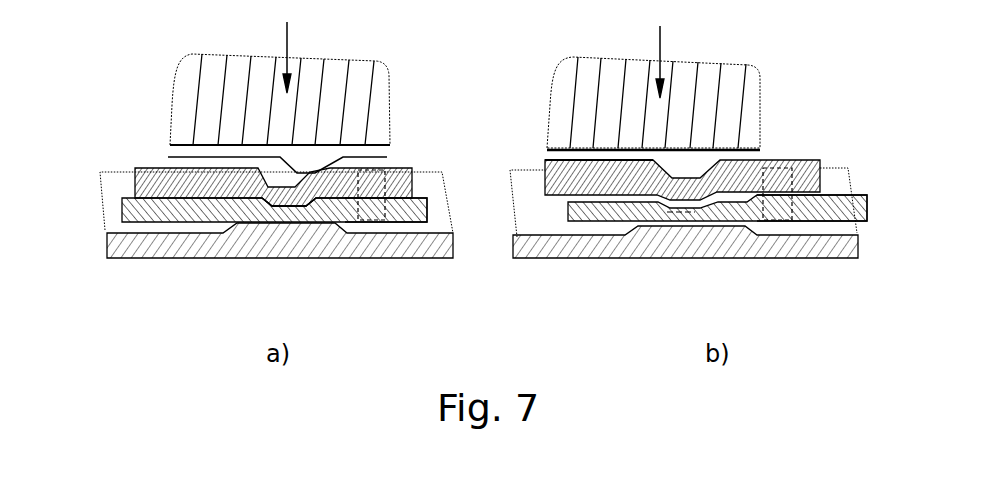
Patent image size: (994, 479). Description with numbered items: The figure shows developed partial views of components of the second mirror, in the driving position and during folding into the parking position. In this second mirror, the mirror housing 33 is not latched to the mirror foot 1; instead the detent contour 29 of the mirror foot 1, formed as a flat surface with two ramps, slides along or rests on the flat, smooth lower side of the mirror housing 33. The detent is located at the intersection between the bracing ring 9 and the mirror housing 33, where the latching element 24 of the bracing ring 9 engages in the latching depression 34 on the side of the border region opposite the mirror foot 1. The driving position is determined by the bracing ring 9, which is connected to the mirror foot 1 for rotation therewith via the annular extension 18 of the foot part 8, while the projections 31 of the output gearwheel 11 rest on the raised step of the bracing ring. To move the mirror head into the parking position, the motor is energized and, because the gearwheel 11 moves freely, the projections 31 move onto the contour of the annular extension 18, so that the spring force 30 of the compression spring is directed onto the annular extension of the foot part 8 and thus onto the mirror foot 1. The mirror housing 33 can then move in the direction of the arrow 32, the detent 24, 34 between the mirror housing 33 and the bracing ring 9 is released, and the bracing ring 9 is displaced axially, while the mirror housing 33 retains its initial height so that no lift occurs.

The mirror foot 1 is at (138, 247).
The foot part 8 is at (112, 200).
The bracing ring 9 is at (402, 178).
The output gearwheel 11 is at (335, 64).
The annular extension 18 is at (430, 187).
The latching element 24 is at (249, 255).
The latching depression 34 is at (270, 210).
The detent contour 29 is at (283, 222).
The spring force 30 is at (488, 57).
The projections 31 is at (313, 167).
The arrow 32 is at (677, 214).
The mirror housing 33 is at (410, 210).